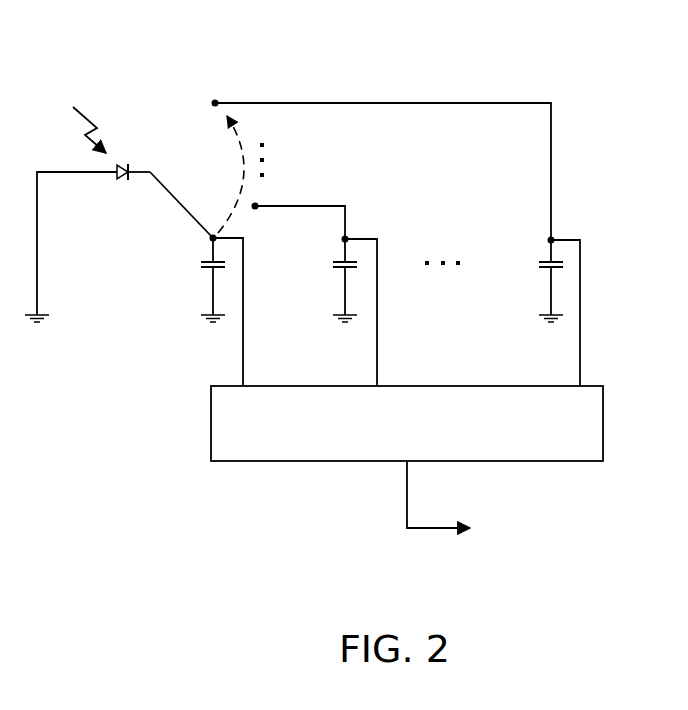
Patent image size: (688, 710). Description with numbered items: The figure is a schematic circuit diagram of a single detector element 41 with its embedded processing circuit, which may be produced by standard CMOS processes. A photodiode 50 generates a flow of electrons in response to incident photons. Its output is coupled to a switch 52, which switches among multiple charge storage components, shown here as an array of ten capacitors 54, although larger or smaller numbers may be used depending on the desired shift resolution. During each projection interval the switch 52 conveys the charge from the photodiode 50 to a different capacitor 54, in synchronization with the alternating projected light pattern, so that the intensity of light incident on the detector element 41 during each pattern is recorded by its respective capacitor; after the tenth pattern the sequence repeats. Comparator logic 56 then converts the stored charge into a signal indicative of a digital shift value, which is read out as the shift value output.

The detector element 41 is at (600, 90).
The photodiode 50 is at (125, 163).
The switch 52 is at (178, 212).
The capacitors 54 is at (207, 266).
The comparator logic 56 is at (211, 428).